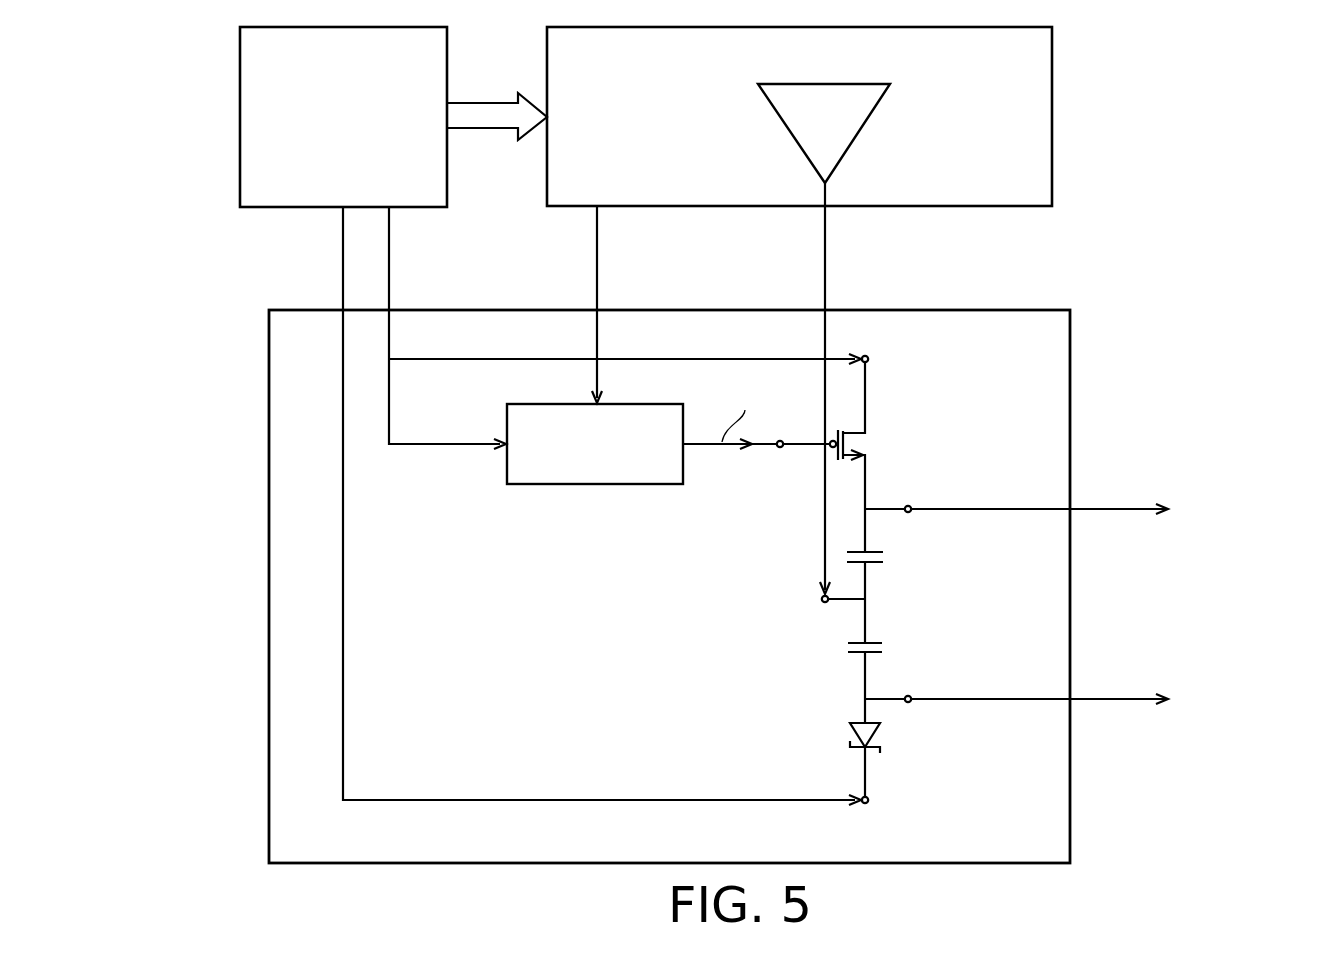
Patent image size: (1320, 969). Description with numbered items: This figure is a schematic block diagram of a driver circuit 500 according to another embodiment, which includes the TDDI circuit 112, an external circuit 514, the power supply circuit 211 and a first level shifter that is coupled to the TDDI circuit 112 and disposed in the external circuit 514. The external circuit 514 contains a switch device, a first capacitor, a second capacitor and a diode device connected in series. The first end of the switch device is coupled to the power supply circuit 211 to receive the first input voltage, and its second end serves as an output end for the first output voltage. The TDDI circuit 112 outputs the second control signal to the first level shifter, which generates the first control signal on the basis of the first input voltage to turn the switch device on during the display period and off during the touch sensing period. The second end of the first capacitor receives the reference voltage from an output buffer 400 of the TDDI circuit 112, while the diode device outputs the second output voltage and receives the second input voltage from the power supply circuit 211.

The driver circuit 500 is at (1222, 866).
The power supply circuit 211 is at (240, 108).
The TDDI circuit 112 is at (844, 138).
The output buffer 400 is at (865, 128).
The external circuit 514 is at (269, 648).